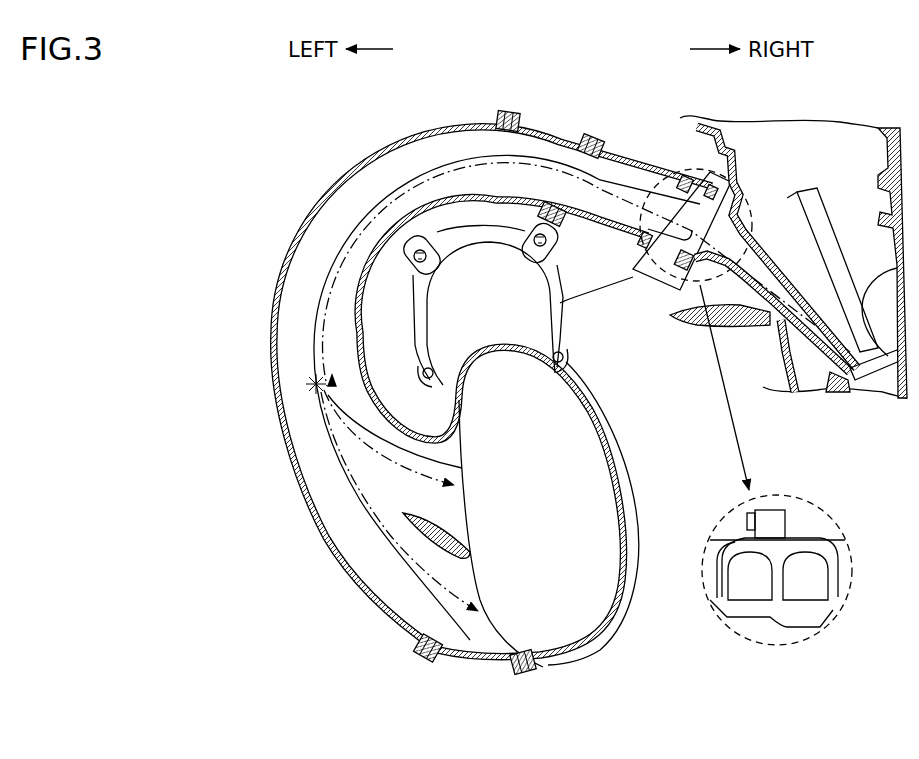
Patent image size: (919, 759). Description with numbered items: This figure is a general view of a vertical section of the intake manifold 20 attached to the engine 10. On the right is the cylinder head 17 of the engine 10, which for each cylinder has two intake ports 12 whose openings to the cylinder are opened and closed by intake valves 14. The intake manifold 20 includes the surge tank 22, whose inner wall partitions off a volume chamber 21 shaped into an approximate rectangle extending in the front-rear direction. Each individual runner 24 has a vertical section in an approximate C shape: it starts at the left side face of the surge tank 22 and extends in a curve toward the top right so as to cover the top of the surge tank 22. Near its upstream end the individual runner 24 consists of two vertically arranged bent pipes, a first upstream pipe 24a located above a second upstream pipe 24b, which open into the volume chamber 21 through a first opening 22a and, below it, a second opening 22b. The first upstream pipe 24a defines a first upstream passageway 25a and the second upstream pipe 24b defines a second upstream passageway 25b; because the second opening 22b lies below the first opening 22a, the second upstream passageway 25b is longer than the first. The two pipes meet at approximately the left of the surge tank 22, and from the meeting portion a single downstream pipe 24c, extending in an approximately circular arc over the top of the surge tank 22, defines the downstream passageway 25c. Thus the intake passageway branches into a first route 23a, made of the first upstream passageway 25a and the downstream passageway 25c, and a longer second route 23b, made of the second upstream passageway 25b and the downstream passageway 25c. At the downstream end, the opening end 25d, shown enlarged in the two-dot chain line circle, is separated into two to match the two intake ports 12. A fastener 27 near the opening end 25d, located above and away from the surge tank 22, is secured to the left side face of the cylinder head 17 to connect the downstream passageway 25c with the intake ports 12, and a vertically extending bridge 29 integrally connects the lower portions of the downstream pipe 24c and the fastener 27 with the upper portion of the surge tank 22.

The engine 10 is at (834, 408).
The intake ports 12 is at (757, 325).
The intake valves 14 is at (822, 202).
The cylinder head 17 is at (893, 126).
The intake manifold 20 is at (227, 162).
The volume chamber 21 is at (555, 517).
The surge tank 22 is at (580, 658).
The first opening 22a is at (465, 462).
The second opening 22b is at (485, 576).
The first route 23a is at (483, 275).
The second route 23b is at (150, 313).
The individual runner 24 is at (371, 158).
The first upstream pipe 24a is at (404, 420).
The second upstream pipe 24b is at (480, 667).
The downstream pipe 24c is at (549, 133).
The first upstream passageway 25a is at (428, 458).
The second upstream passageway 25b is at (370, 577).
The downstream passageway 25c is at (313, 270).
The opening end 25d is at (701, 218).
The fastener 27 is at (694, 170).
The bridge 29 is at (606, 293).